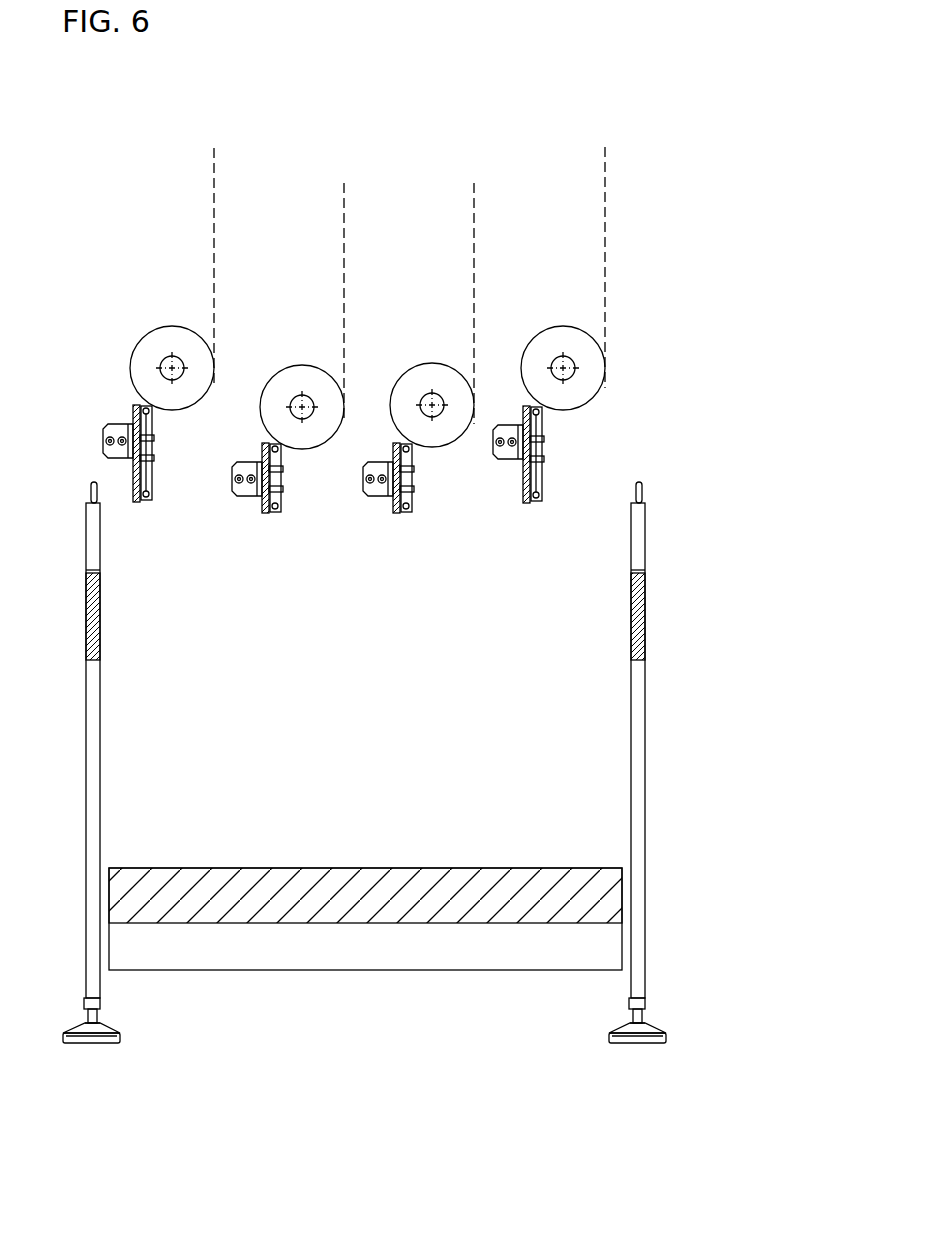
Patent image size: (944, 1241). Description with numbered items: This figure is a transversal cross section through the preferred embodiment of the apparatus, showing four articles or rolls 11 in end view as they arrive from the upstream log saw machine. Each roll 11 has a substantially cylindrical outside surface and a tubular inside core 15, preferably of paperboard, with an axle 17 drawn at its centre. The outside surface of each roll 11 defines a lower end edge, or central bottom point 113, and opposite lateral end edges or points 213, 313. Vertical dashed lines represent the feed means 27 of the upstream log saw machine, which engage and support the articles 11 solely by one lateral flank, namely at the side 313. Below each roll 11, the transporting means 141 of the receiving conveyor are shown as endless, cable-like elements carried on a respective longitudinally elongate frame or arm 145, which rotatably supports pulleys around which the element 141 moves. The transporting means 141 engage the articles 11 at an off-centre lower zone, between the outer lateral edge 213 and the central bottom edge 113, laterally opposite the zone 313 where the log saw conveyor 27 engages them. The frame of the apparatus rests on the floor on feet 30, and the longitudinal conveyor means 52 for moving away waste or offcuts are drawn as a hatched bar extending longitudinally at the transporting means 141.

The articles or rolls 11 is at (133, 328).
The tubular inside core 15 is at (170, 366).
The axle 17 is at (160, 368).
The feed means 27 is at (208, 228).
The feet 30 is at (122, 1038).
The longitudinal conveyor means 52 is at (245, 864).
The lower end edge 113 is at (173, 415).
The transporting means 141 is at (132, 404).
The frame or elongate arm 145 is at (397, 517).
The lateral end edge 213 is at (240, 402).
The lateral end edge 313 is at (353, 410).